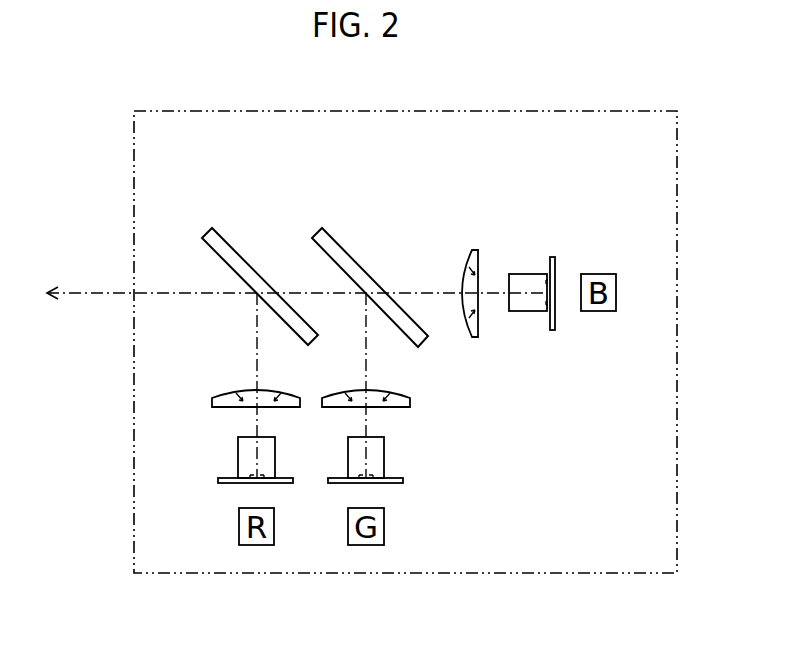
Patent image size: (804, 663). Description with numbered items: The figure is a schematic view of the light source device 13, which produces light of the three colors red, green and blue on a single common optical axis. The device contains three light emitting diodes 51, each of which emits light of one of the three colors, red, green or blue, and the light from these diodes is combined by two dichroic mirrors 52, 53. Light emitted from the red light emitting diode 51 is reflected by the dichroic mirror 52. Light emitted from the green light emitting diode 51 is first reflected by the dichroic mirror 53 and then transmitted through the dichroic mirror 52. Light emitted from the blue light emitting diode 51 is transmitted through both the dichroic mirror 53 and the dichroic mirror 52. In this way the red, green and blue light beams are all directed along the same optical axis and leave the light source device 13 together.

The light source device 13 is at (646, 110).
The light emitting diode 51 is at (262, 476).
The dichroic mirror 52 is at (215, 233).
The dichroic mirror 53 is at (325, 233).